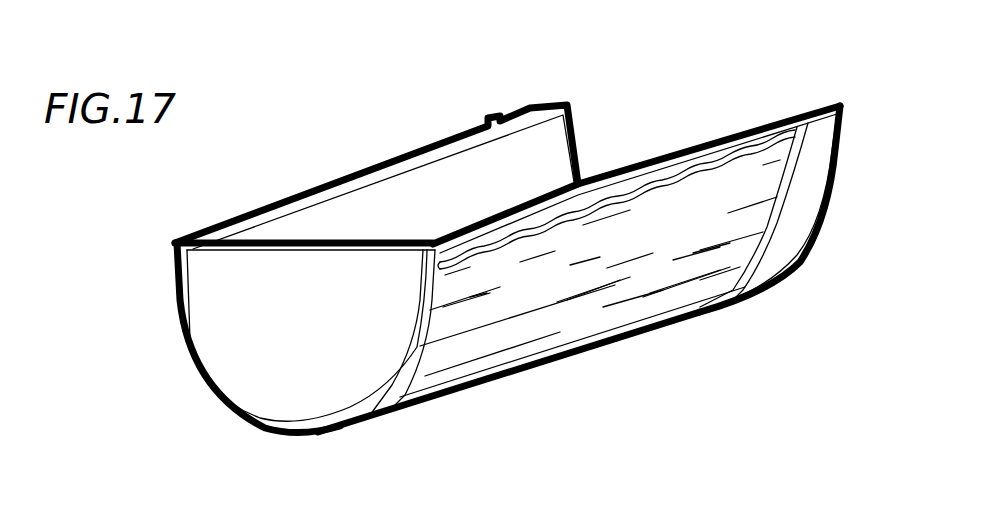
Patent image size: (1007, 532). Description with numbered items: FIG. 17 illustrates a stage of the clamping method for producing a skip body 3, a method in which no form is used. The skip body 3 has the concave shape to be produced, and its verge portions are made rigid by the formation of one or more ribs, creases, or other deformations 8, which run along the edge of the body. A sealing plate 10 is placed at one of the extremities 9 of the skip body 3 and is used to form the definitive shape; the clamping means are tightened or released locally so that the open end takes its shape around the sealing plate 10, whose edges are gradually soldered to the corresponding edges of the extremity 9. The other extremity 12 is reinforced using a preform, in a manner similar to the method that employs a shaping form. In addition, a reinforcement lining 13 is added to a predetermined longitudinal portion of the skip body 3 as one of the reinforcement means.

The skip body 3 is at (583, 368).
The ribs, creases, or other deformations 8 is at (708, 170).
The extremity 9 is at (206, 412).
The sealing plate 10 is at (364, 393).
The other extremity 12 is at (618, 107).
The reinforcement lining 13 is at (815, 193).